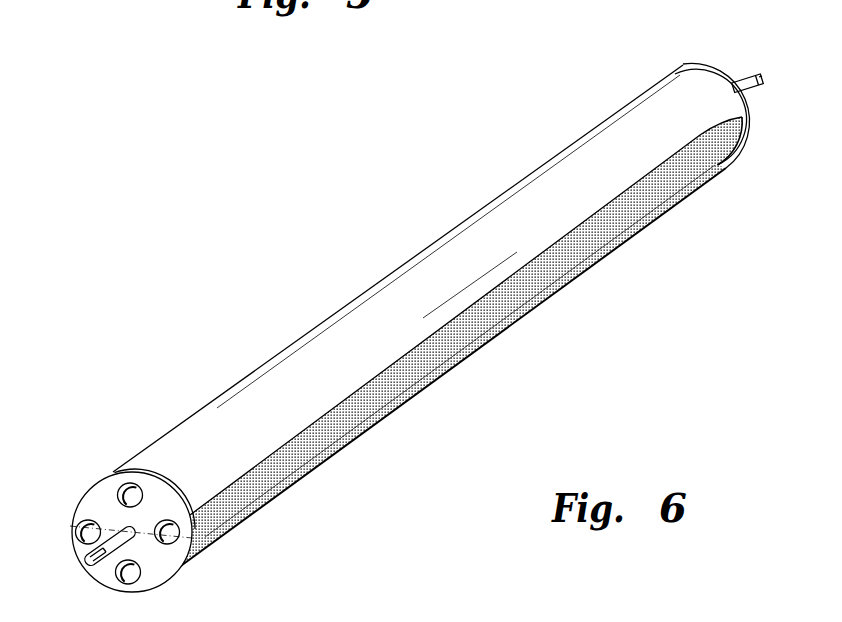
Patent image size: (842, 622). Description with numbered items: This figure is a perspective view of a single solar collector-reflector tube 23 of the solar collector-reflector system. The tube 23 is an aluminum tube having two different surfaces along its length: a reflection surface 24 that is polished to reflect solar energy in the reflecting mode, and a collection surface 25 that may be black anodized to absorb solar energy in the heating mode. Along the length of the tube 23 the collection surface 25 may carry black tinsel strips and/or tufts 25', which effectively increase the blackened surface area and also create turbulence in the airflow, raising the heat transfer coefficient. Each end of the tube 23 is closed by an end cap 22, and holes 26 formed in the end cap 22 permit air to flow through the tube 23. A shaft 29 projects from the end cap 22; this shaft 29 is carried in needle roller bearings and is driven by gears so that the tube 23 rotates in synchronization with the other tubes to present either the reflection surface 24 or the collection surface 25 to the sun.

The end cap 22 is at (702, 68).
The solar collector-reflector tube 23 is at (183, 420).
The reflection surface 24 is at (520, 198).
The collection surface 25 is at (460, 342).
The black tinsel strips and/or tufts 25' is at (770, 176).
The hole 26 is at (122, 578).
The shaft 29 is at (751, 78).